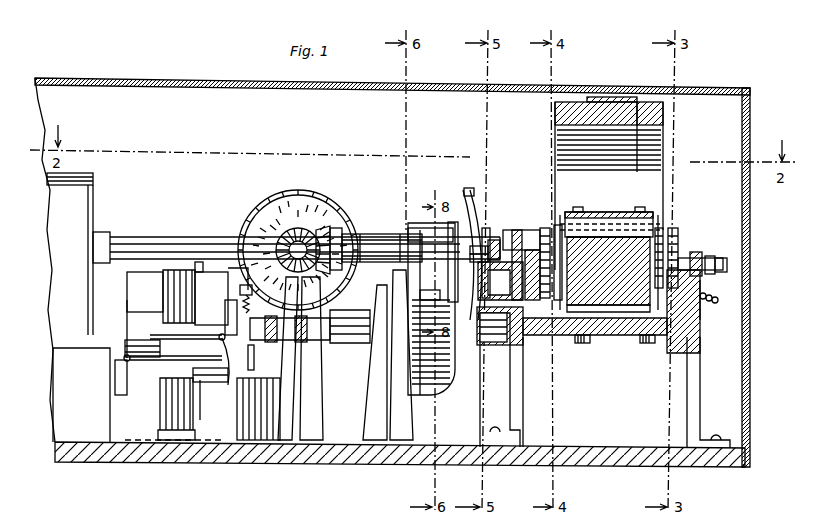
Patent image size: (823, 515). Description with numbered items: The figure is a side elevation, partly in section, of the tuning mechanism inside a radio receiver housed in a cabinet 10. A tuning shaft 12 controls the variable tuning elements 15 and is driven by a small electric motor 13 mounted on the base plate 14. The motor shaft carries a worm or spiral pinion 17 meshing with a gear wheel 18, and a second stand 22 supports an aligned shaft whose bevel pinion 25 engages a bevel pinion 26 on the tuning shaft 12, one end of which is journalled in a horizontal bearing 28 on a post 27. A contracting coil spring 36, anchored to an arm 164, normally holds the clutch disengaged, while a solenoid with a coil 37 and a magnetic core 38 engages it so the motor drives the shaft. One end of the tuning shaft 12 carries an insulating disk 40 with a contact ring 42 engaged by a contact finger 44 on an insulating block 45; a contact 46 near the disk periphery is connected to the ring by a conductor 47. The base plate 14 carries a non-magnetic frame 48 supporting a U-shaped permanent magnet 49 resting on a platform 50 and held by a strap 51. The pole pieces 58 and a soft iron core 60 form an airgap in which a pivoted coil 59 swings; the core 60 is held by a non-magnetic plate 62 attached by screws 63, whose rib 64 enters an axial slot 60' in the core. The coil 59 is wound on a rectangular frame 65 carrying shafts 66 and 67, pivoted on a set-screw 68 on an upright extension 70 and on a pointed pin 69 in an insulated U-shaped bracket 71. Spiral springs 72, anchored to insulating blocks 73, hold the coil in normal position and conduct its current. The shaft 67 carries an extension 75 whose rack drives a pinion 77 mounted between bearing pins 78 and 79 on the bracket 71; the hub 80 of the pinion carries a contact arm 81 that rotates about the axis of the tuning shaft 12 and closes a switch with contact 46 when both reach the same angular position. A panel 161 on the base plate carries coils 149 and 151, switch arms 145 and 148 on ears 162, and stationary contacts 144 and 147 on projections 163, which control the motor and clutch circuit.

The cabinet 10 is at (185, 78).
The tuning shaft 12 is at (148, 237).
The electric motor 13 is at (431, 309).
The base plate 14 is at (283, 455).
The tuning elements 15 is at (93, 178).
The worm or spiral pinion 17 is at (318, 340).
The gear wheel 18 is at (338, 205).
The second stand 22 is at (312, 405).
The bevel pinion 25 is at (285, 228).
The bevel pinion 26 is at (320, 226).
The post or stand 27 is at (380, 428).
The horizontal bearing 28 is at (372, 233).
The contracting coil spring 36 is at (246, 295).
The solenoid coil 37 is at (248, 415).
The reciprocable magnetic core 38 is at (254, 366).
The insulating disk 40 is at (488, 228).
The contact ring 42 is at (440, 308).
The contact finger 44 is at (452, 220).
The insulating block 45 is at (410, 236).
The contact 46 is at (478, 200).
The conductor 47 is at (470, 188).
The non-magnetic frame 48 is at (518, 410).
The U-shaped permanent magnet 49 is at (655, 200).
The platform 50 is at (600, 320).
The strap 51 is at (607, 97).
The pole pieces 58 is at (625, 335).
The pivoted coil 59 is at (655, 222).
The cylindrical core 60 is at (608, 306).
The axial slot or groove 60' is at (608, 198).
The non-magnetic plate 62 is at (592, 212).
The screws 63 is at (640, 207).
The rib 64 is at (608, 222).
The non-magnetic frame 65 is at (660, 300).
The shaft 66 is at (690, 330).
The shaft 67 is at (558, 225).
The set-screw 68 is at (705, 294).
The pointed pin 69 is at (545, 228).
The upright extension 70 is at (706, 305).
The insulated U-shaped bracket 71 is at (530, 230).
The spiral springs 72 is at (680, 242).
The insulating blocks 73 is at (690, 345).
The extension 75 is at (495, 240).
The pinion 77 is at (500, 281).
The bearing pin 78 is at (518, 230).
The bearing pin 79 is at (490, 246).
The hub 80 is at (500, 345).
The contact arm 81 is at (492, 258).
The stationary contact 144 is at (140, 338).
The switch arm 145 is at (208, 334).
The stationary contact 147 is at (212, 367).
The switch arm 148 is at (150, 362).
The coil 149 is at (170, 292).
The coil 151 is at (162, 416).
The supporting panel or bracket 161 is at (198, 262).
The lateral projections or ears 162 is at (229, 386).
The lateral projections 163 is at (202, 400).
The arm 164 is at (225, 273).